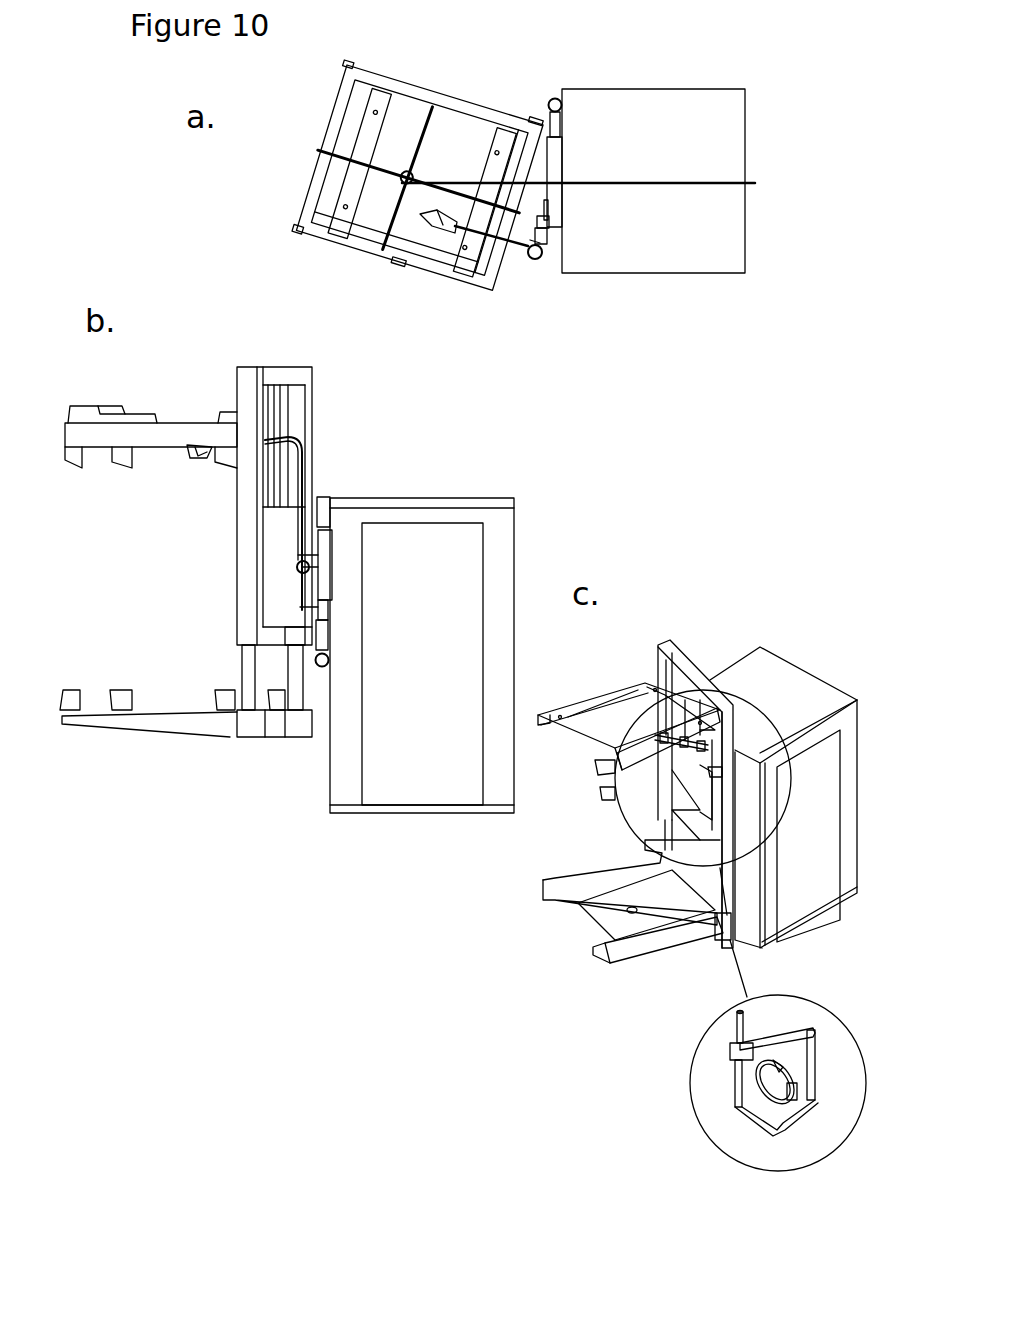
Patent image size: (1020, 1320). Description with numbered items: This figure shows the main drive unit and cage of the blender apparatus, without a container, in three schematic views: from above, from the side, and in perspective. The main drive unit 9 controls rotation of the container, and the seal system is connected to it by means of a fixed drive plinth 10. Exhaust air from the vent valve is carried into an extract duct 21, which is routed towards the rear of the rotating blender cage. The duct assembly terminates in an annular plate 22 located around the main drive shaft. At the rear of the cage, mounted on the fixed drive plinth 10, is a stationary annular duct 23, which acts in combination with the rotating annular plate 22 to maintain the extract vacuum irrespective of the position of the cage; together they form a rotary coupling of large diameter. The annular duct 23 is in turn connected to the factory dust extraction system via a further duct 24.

The main drive unit 9 is at (728, 143).
The fixed drive plinth 10 is at (540, 167).
The extract duct 21 is at (423, 228).
The annular plate 22 is at (775, 1080).
The annular duct 23 is at (817, 1087).
The duct 24 is at (750, 1038).